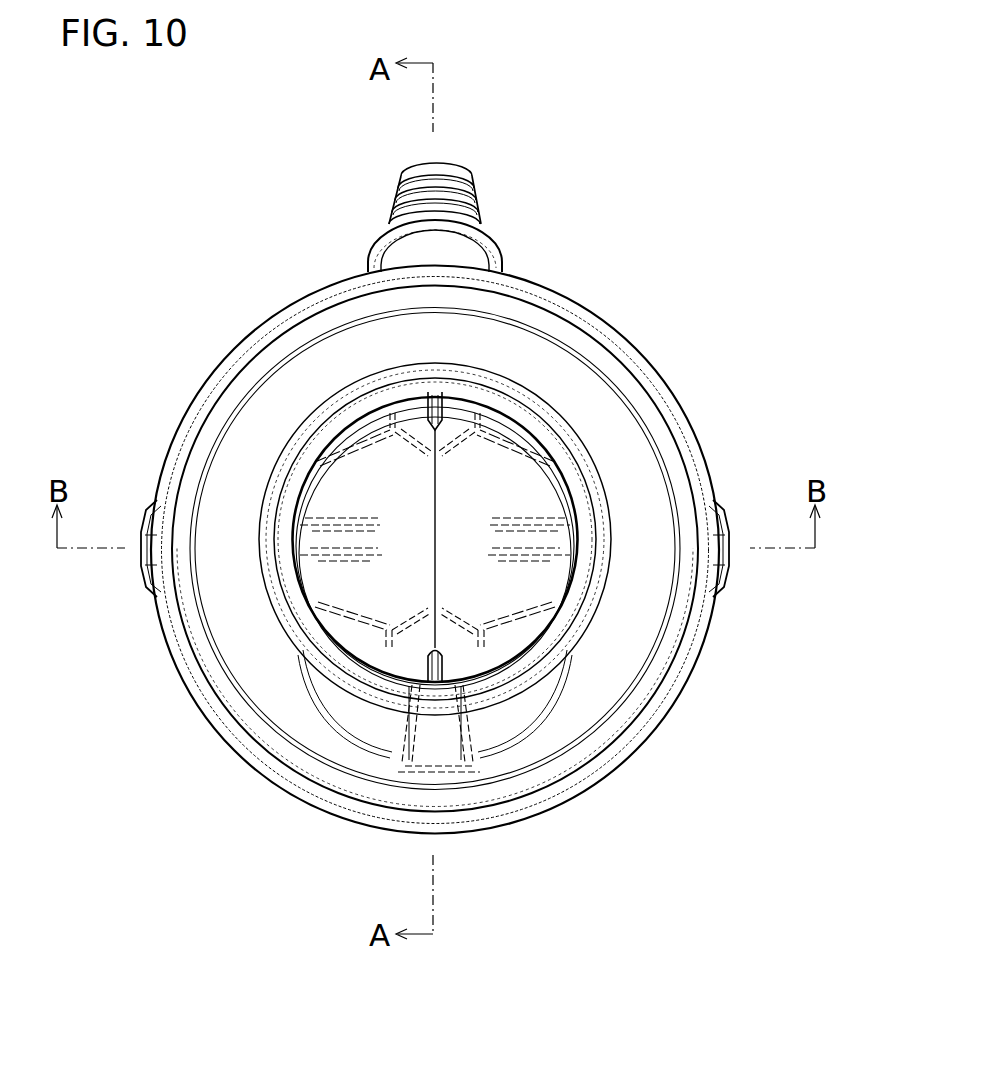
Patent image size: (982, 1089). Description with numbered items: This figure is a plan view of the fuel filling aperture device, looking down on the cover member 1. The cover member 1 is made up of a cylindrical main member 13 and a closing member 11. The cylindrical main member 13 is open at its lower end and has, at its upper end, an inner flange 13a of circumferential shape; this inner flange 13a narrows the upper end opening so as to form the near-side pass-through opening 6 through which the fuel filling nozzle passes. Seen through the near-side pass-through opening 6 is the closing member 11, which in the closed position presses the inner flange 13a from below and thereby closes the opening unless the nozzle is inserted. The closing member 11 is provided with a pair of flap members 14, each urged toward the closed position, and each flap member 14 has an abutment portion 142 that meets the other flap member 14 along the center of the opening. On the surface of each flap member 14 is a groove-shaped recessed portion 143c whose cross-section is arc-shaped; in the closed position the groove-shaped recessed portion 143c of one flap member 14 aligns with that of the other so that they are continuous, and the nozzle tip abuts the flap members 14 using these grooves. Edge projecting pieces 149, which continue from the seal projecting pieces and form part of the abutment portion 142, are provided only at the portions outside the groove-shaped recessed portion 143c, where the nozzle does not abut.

The cover member 1 is at (672, 395).
The near-side pass-through opening 6 is at (540, 453).
The closing member 11 is at (533, 502).
The cylindrical main member 13 is at (687, 420).
The inner flange 13a is at (572, 368).
The flap member 14 is at (350, 467).
The abutment portion 142 is at (437, 490).
The groove-shaped recessed portion 143c is at (547, 512).
The edge projecting piece 149 is at (407, 393).